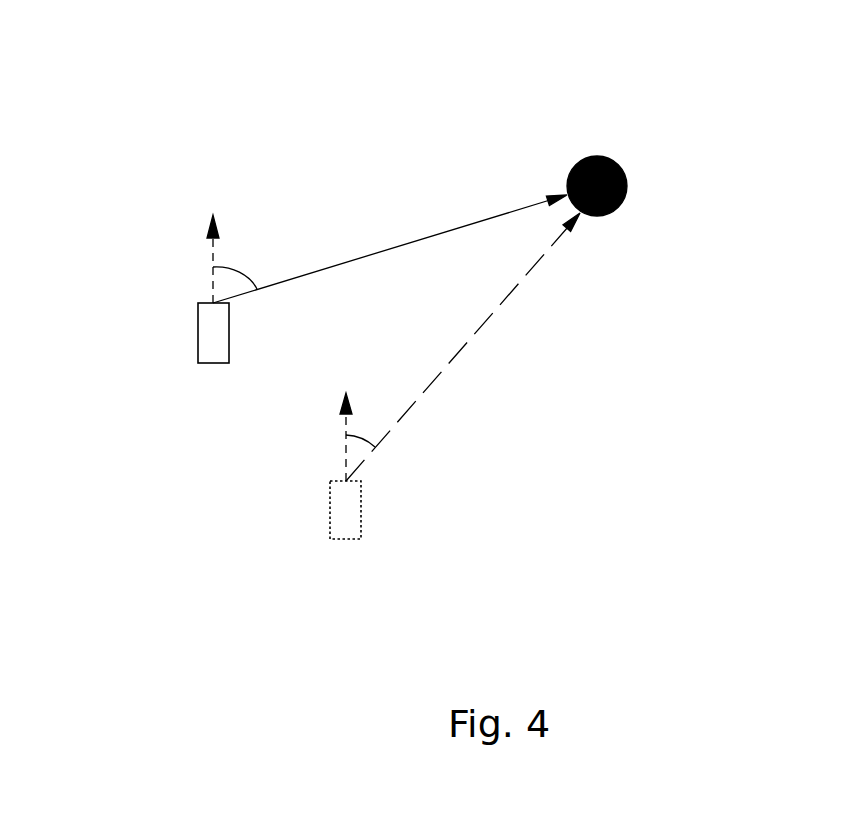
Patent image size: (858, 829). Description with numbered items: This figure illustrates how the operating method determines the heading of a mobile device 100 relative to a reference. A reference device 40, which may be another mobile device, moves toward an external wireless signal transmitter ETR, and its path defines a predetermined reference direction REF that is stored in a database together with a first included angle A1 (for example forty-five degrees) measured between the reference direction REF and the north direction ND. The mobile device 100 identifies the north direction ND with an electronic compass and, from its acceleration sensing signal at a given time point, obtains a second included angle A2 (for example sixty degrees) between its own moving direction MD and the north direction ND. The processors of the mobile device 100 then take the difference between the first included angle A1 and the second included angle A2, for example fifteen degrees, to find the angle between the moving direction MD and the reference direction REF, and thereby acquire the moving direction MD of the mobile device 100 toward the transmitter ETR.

The mobile device 100 is at (198, 332).
The reference device 40 is at (361, 505).
The wireless signal transmitter ETR is at (626, 174).
The moving direction MD is at (390, 248).
The predetermined reference direction REF is at (463, 347).
The north direction ND is at (277, 330).
The first included angle A1 is at (364, 428).
The second included angle A2 is at (239, 268).